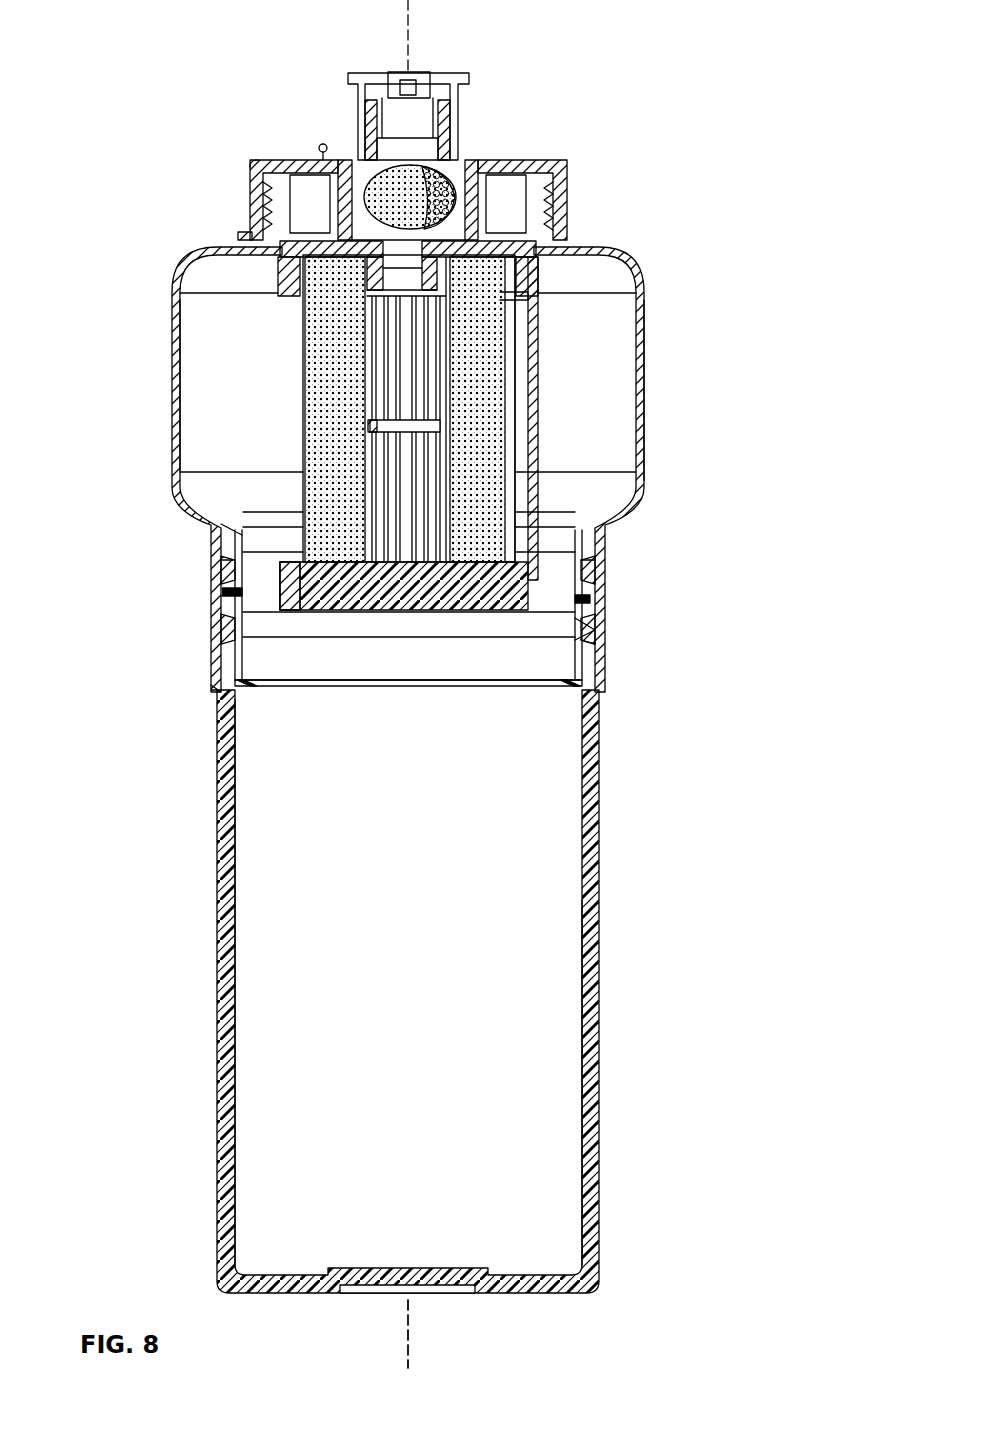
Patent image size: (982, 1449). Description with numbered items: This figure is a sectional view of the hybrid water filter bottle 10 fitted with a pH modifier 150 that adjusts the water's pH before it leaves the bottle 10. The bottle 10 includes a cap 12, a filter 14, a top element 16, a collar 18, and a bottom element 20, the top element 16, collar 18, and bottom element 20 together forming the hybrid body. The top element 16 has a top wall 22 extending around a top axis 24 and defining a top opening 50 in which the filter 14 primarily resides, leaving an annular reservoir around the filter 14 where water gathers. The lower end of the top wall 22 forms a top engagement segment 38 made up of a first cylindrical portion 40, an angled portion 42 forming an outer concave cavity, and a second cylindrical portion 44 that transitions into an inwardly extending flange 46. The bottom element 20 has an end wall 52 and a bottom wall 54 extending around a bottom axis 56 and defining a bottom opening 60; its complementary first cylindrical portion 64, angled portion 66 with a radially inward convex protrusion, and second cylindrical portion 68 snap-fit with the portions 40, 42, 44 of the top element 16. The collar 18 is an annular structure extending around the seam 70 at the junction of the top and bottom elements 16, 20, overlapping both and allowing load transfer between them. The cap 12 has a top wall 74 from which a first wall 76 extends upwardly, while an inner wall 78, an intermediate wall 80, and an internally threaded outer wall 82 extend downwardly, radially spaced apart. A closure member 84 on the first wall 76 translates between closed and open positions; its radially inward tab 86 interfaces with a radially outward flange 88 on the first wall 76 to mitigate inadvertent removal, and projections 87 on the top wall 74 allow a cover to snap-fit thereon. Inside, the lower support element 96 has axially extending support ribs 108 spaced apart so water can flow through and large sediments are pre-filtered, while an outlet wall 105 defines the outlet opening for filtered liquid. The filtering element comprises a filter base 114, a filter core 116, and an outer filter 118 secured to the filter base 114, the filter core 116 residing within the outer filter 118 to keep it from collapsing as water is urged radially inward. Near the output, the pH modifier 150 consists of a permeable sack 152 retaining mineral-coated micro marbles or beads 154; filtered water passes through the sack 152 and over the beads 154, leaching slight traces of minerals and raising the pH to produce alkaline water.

The water filter bottle 10 is at (150, 94).
The cap 12 is at (439, 161).
The filter 14 is at (451, 469).
The top element 16 is at (650, 376).
The collar 18 is at (626, 582).
The bottom element 20 is at (610, 914).
The top wall 22 is at (648, 400).
The top axis 24 is at (412, 12).
The top engagement segment 38 is at (250, 640).
The first cylindrical portion 40 is at (212, 524).
The angled portion 42 is at (598, 604).
The second cylindrical portion 44 is at (212, 690).
The inwardly extending flange 46 is at (570, 690).
The top opening 50 is at (232, 382).
The end wall 52 is at (536, 1290).
The bottom wall 54 is at (598, 1108).
The bottom axis 56 is at (410, 1332).
The bottom opening 60 is at (380, 982).
The first cylindrical portion 64 is at (594, 566).
The angled portion 66 is at (600, 626).
The second cylindrical portion 68 is at (598, 666).
The seam 70 is at (222, 562).
The top wall 74 is at (420, 186).
The first wall 76 is at (452, 108).
The inner wall 78 is at (330, 190).
The intermediate wall 80 is at (276, 208).
The outer wall 82 is at (568, 218).
The closure member 84 is at (380, 78).
The tab 86 is at (370, 120).
The projections 87 is at (320, 146).
The flange 88 is at (436, 80).
The lower support element 96 is at (542, 454).
The outlet wall 105 is at (250, 232).
The support ribs 108 is at (532, 490).
The filter base 114 is at (228, 590).
The filter core 116 is at (370, 426).
The outer filter 118 is at (332, 453).
The pH modifier 150 is at (508, 155).
The sack 152 is at (450, 212).
The beads 154 is at (470, 196).